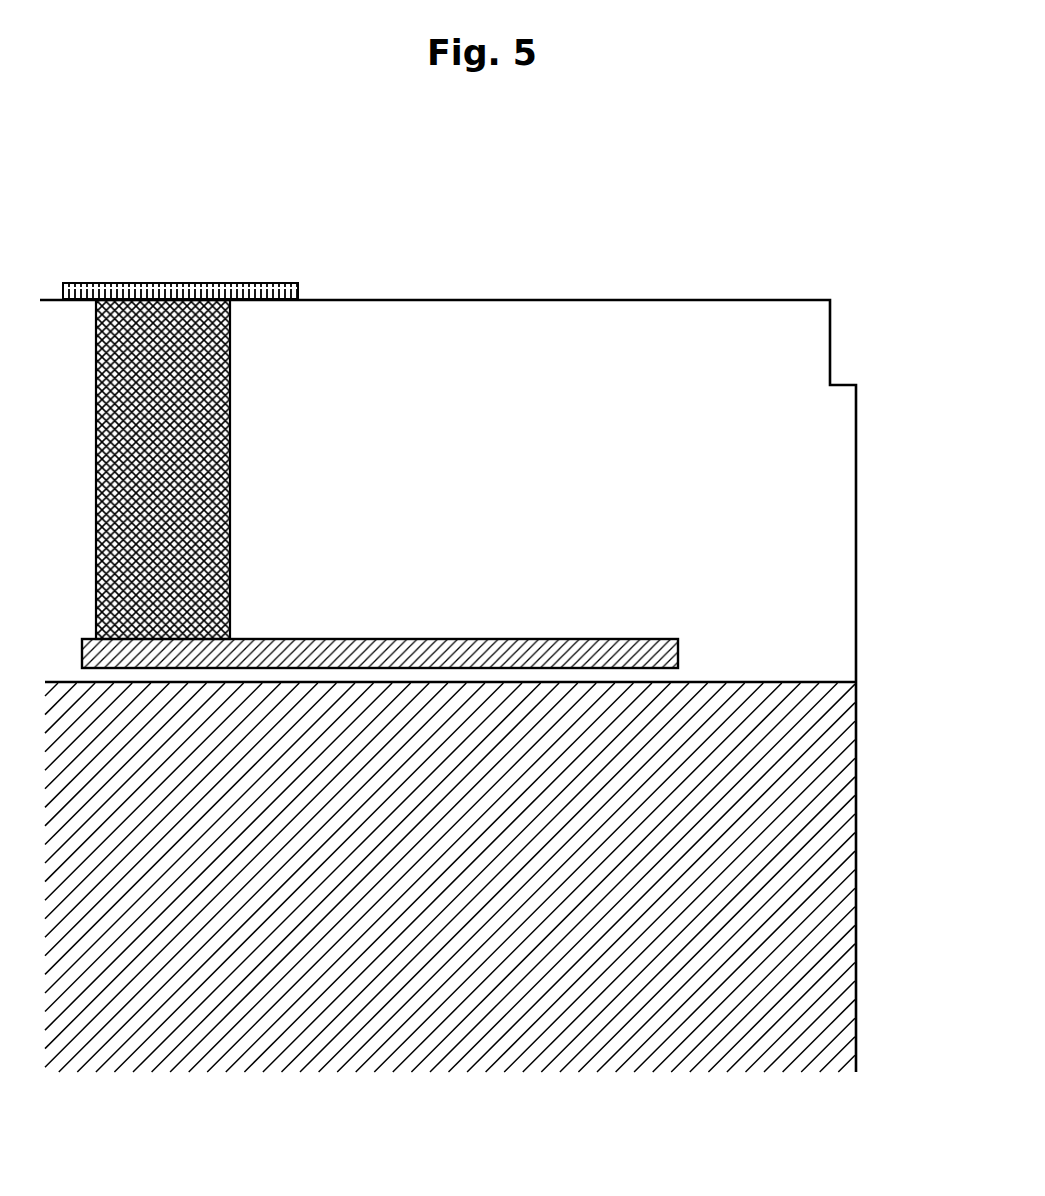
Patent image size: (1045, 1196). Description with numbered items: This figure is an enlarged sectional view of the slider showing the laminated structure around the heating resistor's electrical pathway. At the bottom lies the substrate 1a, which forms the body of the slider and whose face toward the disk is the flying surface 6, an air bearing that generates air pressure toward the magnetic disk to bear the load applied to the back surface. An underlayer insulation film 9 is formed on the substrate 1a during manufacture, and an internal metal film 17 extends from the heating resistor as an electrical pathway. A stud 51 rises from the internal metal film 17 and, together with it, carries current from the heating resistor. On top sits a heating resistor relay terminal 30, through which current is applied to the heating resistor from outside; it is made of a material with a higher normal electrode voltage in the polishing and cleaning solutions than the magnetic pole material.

The heating resistor relay terminal 30 is at (183, 283).
The stud 51 is at (230, 408).
The internal metal film 17 is at (565, 638).
The underlayer insulation film 9 is at (848, 657).
The flying surface 6 is at (848, 837).
The substrate 1a is at (162, 1053).